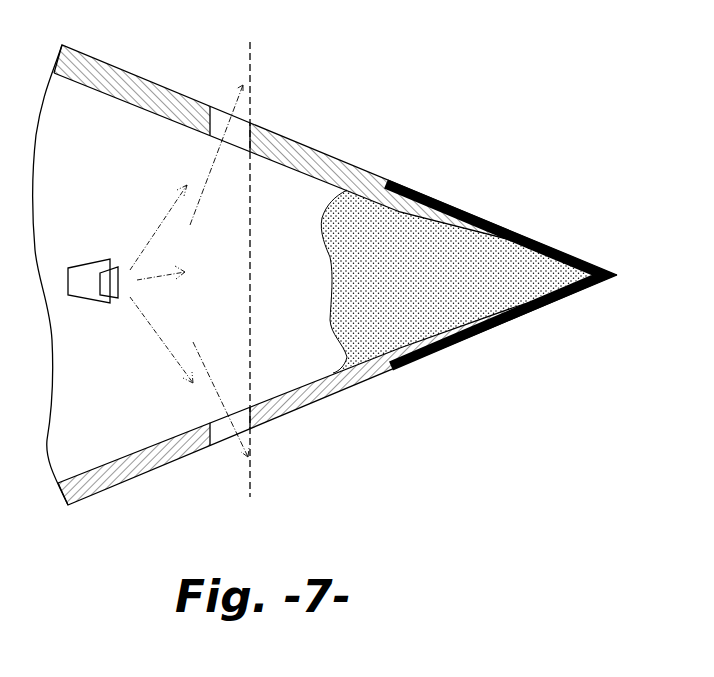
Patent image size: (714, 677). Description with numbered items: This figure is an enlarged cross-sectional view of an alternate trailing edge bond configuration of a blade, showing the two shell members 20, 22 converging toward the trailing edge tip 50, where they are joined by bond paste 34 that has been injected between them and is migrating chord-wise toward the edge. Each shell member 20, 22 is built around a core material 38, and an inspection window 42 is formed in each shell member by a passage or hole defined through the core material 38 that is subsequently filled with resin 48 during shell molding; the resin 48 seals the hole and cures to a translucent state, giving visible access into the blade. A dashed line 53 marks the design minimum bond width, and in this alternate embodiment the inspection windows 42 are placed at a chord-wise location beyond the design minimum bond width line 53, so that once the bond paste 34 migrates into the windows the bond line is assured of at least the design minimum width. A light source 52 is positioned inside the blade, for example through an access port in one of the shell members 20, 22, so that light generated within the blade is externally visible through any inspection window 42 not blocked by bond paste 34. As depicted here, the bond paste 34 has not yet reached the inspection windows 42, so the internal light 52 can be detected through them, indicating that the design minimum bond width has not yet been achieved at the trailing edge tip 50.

The shell member 20 is at (108, 63).
The shell member 22 is at (128, 482).
The bond paste 34 is at (357, 285).
The core material 38 is at (333, 156).
The inspection window 42 is at (252, 100).
The resin 48 is at (240, 149).
The tip 50 is at (597, 258).
The light source 52 is at (82, 296).
The design minimum bond width line 53 is at (250, 258).